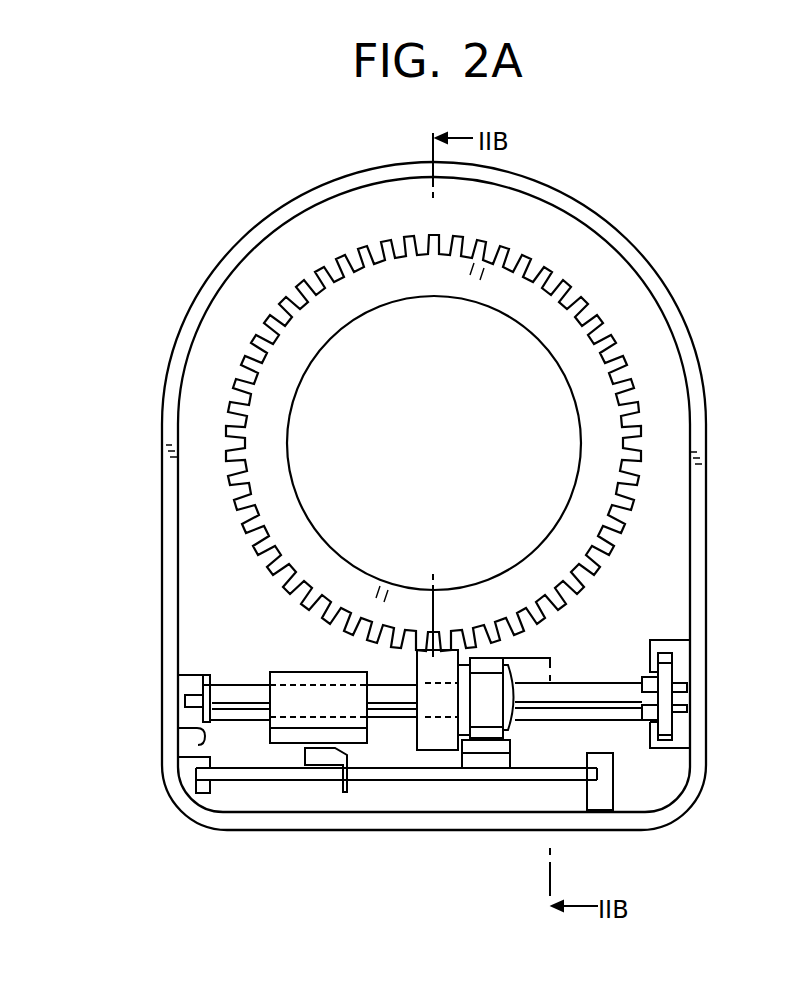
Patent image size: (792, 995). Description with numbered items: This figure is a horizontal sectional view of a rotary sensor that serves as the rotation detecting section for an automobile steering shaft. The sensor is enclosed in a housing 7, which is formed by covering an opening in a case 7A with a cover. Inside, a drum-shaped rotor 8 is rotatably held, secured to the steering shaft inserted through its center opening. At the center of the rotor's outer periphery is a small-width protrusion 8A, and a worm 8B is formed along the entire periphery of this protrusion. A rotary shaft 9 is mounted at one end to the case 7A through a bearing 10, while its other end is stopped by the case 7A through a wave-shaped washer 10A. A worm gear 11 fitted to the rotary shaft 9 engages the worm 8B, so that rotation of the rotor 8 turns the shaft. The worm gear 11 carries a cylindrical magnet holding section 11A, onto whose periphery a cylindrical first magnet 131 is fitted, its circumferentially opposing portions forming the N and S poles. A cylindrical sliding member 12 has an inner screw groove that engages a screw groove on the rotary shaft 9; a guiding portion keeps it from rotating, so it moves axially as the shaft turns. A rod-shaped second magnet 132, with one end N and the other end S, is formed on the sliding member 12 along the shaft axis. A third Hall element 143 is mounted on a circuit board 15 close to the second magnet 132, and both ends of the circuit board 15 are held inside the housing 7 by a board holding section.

The housing 7 is at (660, 268).
The case 7A is at (695, 477).
The rotor 8 is at (494, 410).
The small-width protrusion 8A is at (530, 302).
The worm 8B is at (613, 352).
The rotary shaft 9 is at (235, 697).
The bearing 10 is at (665, 665).
The wave-shaped washer 10A is at (198, 745).
The worm gear 11 is at (433, 760).
The magnet holding section 11A is at (486, 724).
The sliding member 12 is at (268, 726).
The first magnet 131 is at (490, 662).
The second magnet 132 is at (293, 740).
The third Hall element 143 is at (323, 767).
The circuit board 15 is at (576, 776).